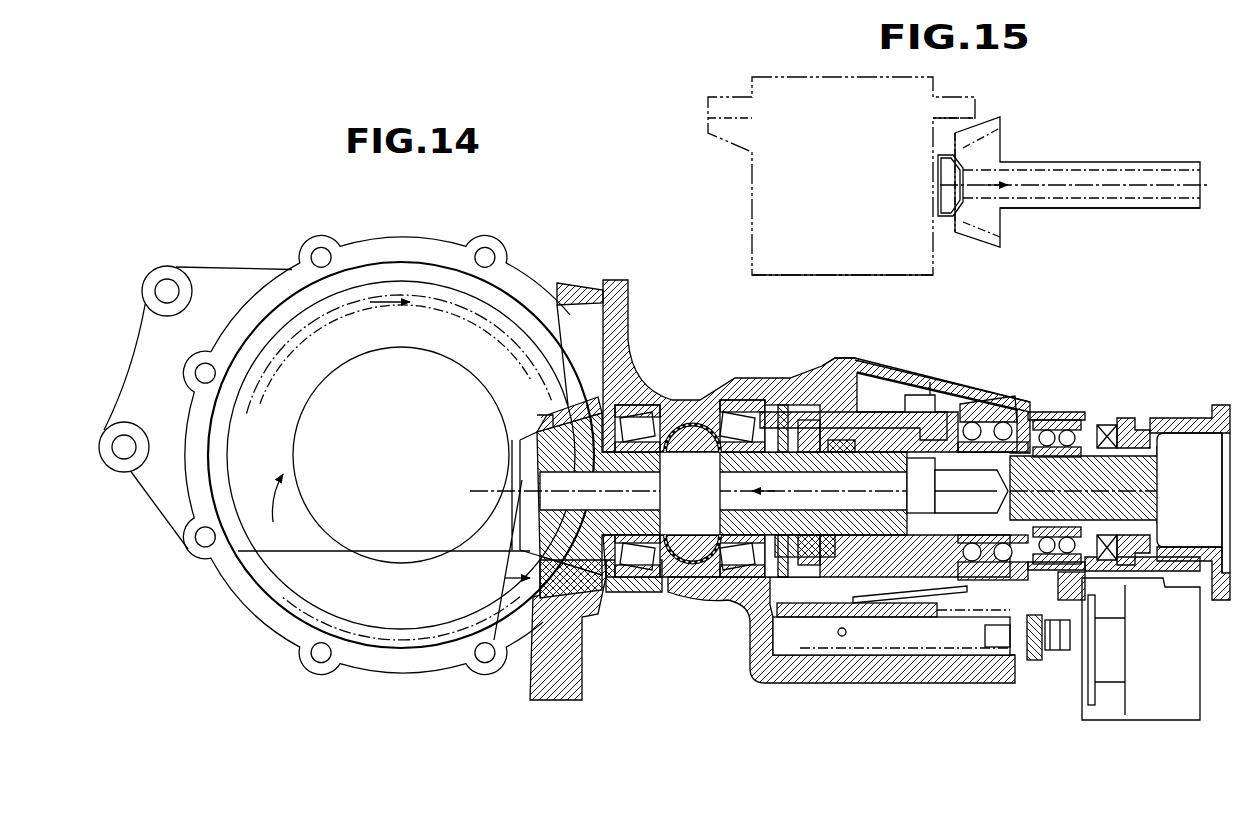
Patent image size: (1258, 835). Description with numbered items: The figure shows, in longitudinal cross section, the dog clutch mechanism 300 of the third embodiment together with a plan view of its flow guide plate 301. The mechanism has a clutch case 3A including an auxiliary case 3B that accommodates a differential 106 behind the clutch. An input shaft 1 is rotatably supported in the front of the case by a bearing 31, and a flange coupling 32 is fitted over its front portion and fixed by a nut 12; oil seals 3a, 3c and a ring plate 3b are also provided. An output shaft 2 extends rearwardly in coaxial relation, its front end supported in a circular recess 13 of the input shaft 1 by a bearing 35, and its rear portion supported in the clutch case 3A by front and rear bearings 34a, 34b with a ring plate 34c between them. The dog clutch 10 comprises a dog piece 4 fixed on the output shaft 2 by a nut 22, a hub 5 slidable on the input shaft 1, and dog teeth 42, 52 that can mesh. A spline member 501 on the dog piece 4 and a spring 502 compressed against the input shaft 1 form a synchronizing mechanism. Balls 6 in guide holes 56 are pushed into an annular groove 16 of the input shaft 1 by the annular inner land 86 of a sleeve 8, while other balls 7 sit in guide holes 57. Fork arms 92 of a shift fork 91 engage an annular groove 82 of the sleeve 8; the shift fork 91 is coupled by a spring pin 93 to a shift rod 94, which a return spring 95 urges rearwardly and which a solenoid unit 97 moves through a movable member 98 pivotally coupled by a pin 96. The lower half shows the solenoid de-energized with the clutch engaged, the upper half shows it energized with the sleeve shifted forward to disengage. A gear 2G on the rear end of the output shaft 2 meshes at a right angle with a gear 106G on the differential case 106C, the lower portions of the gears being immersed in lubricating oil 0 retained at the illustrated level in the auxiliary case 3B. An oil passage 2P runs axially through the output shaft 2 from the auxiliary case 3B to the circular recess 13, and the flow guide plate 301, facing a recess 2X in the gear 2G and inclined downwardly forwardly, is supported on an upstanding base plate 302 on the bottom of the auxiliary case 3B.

In FIG. 14, the differential 106 is at (383, 298).
In FIG. 15, the differential 106 is at (742, 195).
In FIG. 14, the gear 106G is at (445, 288).
In FIG. 15, the gear 106G is at (745, 149).
In FIG. 14, the differential case 106C is at (486, 356).
In FIG. 15, the differential case 106C is at (838, 276).
In FIG. 14, the auxiliary case 3B is at (286, 640).
In FIG. 14, the lubricating oil 0 is at (398, 549).
In FIG. 14, the dog clutch mechanism 300 is at (698, 290).
In FIG. 14, the clutch case 3A is at (879, 360).
In FIG. 14, the dog clutch 10 is at (836, 370).
In FIG. 14, the hub 5 is at (922, 392).
In FIG. 14, the base plate 302 is at (508, 533).
In FIG. 14, the oil seal 3c is at (1005, 686).
In FIG. 14, the dog piece 4 is at (841, 630).
In FIG. 14, the rear bearing 34b is at (633, 593).
In FIG. 14, the output shaft 2 is at (688, 412).
In FIG. 15, the output shaft 2 is at (1097, 162).
In FIG. 14, the recess 2X is at (842, 525).
In FIG. 15, the recess 2X is at (950, 240).
In FIG. 14, the gear 2G is at (560, 409).
In FIG. 15, the gear 2G is at (992, 250).
In FIG. 14, the flow guide plate 301 is at (512, 483).
In FIG. 15, the flow guide plate 301 is at (938, 186).
In FIG. 14, the circular recess 13 is at (921, 485).
In FIG. 14, the annular groove 16 is at (971, 490).
In FIG. 14, the guide holes 56 is at (966, 503).
In FIG. 14, the ring plate 34c is at (704, 402).
In FIG. 14, the front bearing 34a is at (748, 400).
In FIG. 14, the oil passage 2P is at (693, 562).
In FIG. 15, the oil passage 2P is at (1118, 203).
In FIG. 14, the dog teeth 42 is at (785, 405).
In FIG. 14, the dog teeth 52 is at (803, 418).
In FIG. 14, the spring 502 is at (853, 414).
In FIG. 14, the nut 22 is at (841, 453).
In FIG. 14, the spline member 501 is at (793, 535).
In FIG. 14, the annular groove 82 is at (988, 408).
In FIG. 14, the sleeve 8 is at (1010, 410).
In FIG. 14, the balls 6 is at (962, 428).
In FIG. 14, the annular inner land 86 is at (998, 558).
In FIG. 14, the bearing 31 is at (1069, 420).
In FIG. 14, the guide holes 57 is at (1047, 428).
In FIG. 14, the oil seal 3a is at (1105, 422).
In FIG. 14, the ring plate 3b is at (1130, 424).
In FIG. 14, the input shaft 1 is at (1114, 485).
In FIG. 14, the nut 12 is at (1189, 490).
In FIG. 14, the flange coupling 32 is at (1180, 416).
In FIG. 14, the shift fork 91 is at (878, 660).
In FIG. 14, the bearing 35 is at (884, 578).
In FIG. 14, the fork arms 92 is at (932, 589).
In FIG. 14, the return spring 95 is at (930, 656).
In FIG. 14, the spring pin 93 is at (840, 637).
In FIG. 14, the shift rod 94 is at (986, 645).
In FIG. 14, the balls 7 is at (1071, 590).
In FIG. 14, the movable member 98 is at (1035, 662).
In FIG. 14, the pin 96 is at (1056, 652).
In FIG. 14, the solenoid unit 97 is at (1190, 641).